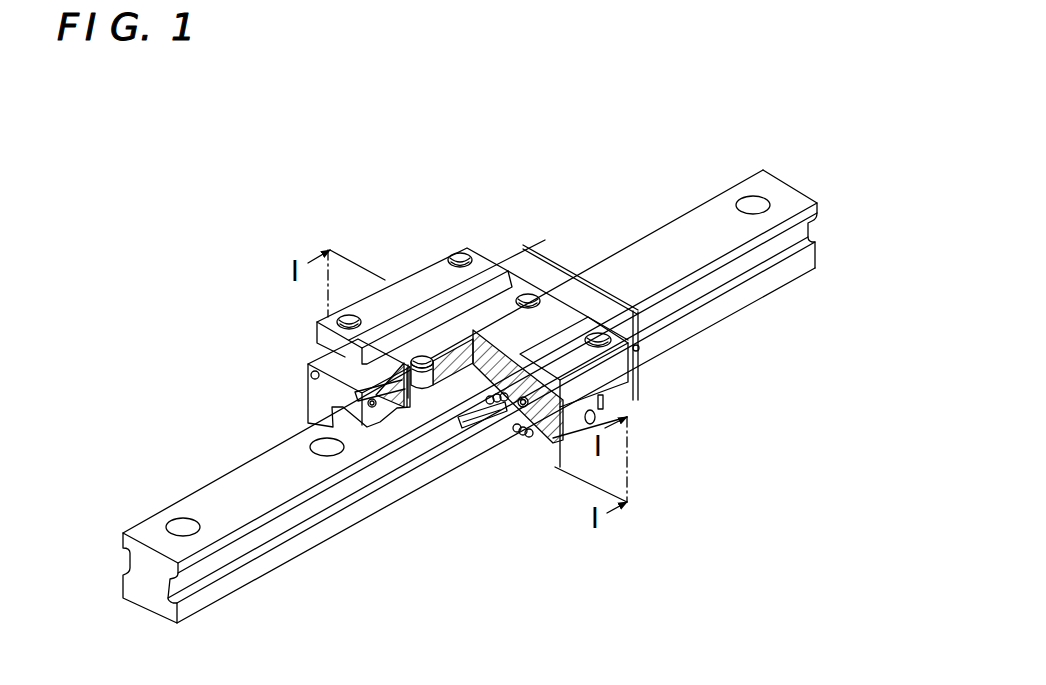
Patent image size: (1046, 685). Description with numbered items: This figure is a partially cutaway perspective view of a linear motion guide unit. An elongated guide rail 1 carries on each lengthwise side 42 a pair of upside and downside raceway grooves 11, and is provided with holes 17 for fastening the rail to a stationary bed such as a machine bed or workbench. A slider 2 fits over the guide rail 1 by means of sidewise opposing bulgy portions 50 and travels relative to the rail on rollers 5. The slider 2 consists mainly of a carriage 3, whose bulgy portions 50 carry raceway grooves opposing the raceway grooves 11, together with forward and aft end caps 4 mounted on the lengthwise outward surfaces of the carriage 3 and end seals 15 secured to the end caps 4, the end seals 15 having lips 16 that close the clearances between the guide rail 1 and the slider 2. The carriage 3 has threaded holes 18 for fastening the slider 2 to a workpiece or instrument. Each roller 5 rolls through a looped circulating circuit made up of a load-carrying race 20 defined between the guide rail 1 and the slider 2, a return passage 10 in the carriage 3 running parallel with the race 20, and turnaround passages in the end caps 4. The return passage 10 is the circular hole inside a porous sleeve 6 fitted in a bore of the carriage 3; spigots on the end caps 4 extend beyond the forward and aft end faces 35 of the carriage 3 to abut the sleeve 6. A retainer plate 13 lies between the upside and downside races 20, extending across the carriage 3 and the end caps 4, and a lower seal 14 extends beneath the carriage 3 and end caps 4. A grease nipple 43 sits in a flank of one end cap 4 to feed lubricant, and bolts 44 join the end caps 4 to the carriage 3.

The guide rail 1 is at (690, 232).
The slider 2 is at (548, 243).
The carriage 3 is at (405, 290).
The end cap 4 is at (568, 282).
The roller 5 is at (486, 400).
The sleeve 6 is at (527, 438).
The return passage 10 is at (528, 398).
The raceway grooves 11 is at (783, 242).
The retainer plate 13 is at (458, 428).
The lower seal 14 is at (483, 445).
The end seal 15 is at (640, 294).
The lips 16 is at (328, 424).
The holes 17 is at (752, 203).
The threaded holes 18 is at (338, 317).
The load-carrying race 20 is at (480, 333).
The forward and aft end faces 35 is at (517, 272).
The lengthwise side 42 is at (310, 542).
The grease nipple 43 is at (640, 352).
The bolts 44 is at (311, 375).
The bulgy portions 50 is at (563, 470).